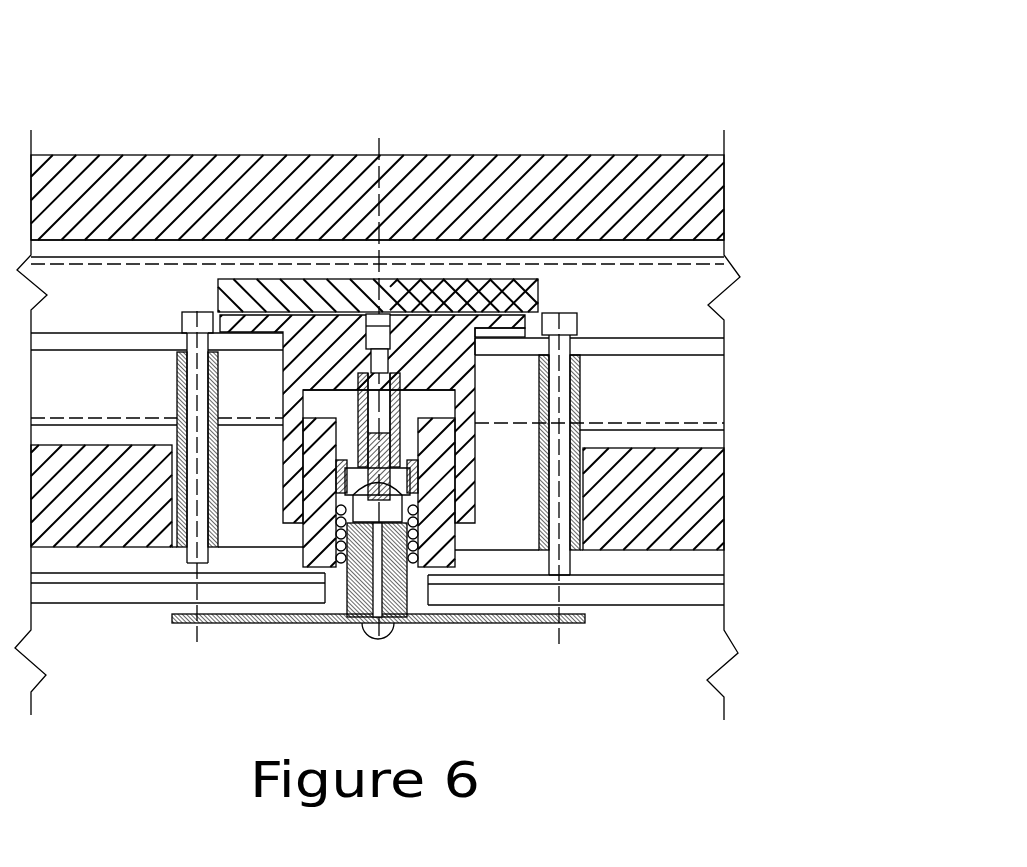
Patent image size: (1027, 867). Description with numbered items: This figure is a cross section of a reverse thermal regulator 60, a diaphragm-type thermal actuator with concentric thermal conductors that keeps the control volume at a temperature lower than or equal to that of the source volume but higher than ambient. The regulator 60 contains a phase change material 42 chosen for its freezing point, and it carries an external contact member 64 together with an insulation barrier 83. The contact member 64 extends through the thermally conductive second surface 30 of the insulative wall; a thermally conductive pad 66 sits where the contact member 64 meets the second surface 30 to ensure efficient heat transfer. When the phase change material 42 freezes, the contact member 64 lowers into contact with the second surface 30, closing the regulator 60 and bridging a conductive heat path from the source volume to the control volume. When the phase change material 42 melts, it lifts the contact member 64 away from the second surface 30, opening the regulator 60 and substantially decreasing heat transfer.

The second surface 30 is at (470, 272).
The phase change material 42 is at (557, 631).
The reverse thermal regulator 60 is at (530, 377).
The external contact member 64 is at (512, 273).
The thermally conductive pad 66 is at (474, 178).
The insulation barrier 83 is at (415, 164).